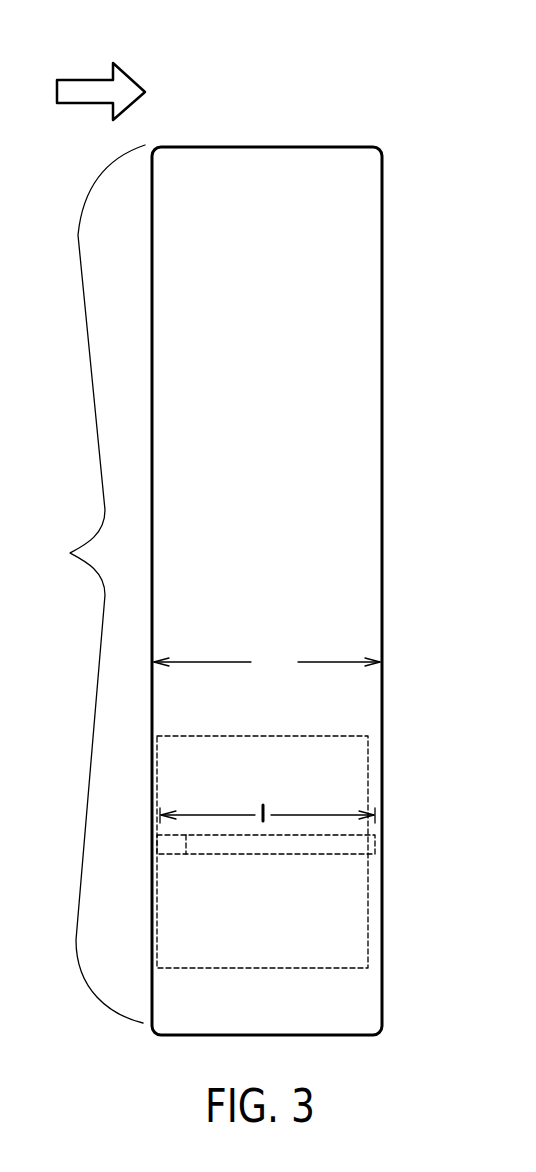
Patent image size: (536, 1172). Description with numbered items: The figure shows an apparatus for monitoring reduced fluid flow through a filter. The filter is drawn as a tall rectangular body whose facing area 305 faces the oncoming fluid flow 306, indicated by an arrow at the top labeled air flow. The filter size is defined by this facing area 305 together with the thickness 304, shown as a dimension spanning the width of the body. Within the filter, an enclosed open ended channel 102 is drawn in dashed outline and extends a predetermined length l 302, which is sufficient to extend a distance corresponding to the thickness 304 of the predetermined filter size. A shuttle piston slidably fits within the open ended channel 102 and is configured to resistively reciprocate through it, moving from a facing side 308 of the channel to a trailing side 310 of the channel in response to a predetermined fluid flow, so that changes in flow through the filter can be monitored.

The enclosed open ended channel 102 is at (320, 857).
The predetermined length l 302 is at (263, 803).
The thickness 304 is at (267, 662).
The facing area 305 is at (207, 590).
The oncoming fluid flow 306 is at (137, 58).
The facing side 308 is at (153, 845).
The trailing side 310 is at (381, 845).